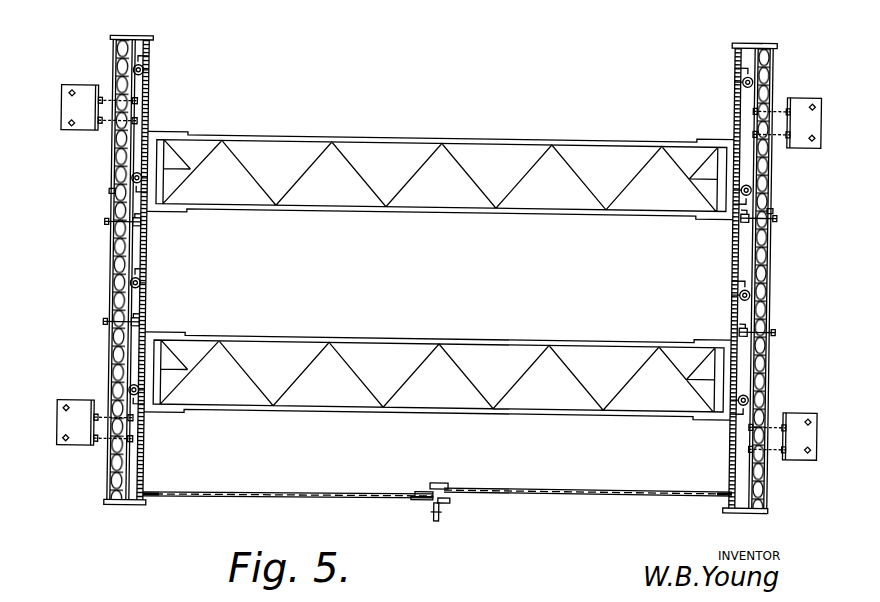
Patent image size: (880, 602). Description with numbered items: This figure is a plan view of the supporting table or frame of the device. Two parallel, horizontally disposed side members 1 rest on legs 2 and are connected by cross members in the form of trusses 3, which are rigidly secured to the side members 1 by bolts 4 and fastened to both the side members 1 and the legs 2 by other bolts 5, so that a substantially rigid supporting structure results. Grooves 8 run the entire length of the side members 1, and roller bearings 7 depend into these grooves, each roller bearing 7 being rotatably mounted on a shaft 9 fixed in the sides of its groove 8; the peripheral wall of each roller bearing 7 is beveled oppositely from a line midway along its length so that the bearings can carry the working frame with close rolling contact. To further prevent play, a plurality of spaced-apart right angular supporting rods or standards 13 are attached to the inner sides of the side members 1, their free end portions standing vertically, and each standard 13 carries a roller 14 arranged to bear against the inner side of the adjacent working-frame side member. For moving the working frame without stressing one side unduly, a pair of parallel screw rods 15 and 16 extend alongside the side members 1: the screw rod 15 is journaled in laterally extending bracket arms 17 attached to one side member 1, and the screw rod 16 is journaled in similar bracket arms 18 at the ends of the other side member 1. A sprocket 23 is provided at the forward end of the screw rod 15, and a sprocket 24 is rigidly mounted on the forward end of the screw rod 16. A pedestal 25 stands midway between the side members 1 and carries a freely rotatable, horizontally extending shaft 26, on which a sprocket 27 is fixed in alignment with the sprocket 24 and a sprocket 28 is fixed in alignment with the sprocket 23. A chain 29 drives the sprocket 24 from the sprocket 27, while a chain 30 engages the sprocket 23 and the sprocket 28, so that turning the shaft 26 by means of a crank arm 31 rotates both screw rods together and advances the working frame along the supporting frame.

The side member 1 is at (110, 303).
The leg 2 is at (96, 93).
The truss 3 is at (384, 138).
The bolt 4 is at (107, 227).
The bolt 5 is at (98, 117).
The roller bearing 7 is at (117, 69).
The groove 8 is at (108, 196).
The shaft 9 is at (112, 255).
The right angular supporting rod or standard 13 is at (141, 74).
The roller 14 is at (139, 82).
The screw rod 15 is at (148, 254).
The screw rod 16 is at (735, 318).
The bracket arm 17 is at (137, 40).
The bracket arm 18 is at (749, 39).
The sprocket 23 is at (153, 497).
The sprocket 24 is at (730, 488).
The pedestal 25 is at (452, 485).
The shaft 26 is at (423, 500).
The sprocket 27 is at (426, 492).
The sprocket 28 is at (453, 502).
The chain 29 is at (563, 488).
The chain 30 is at (315, 495).
The crank arm 31 is at (437, 513).